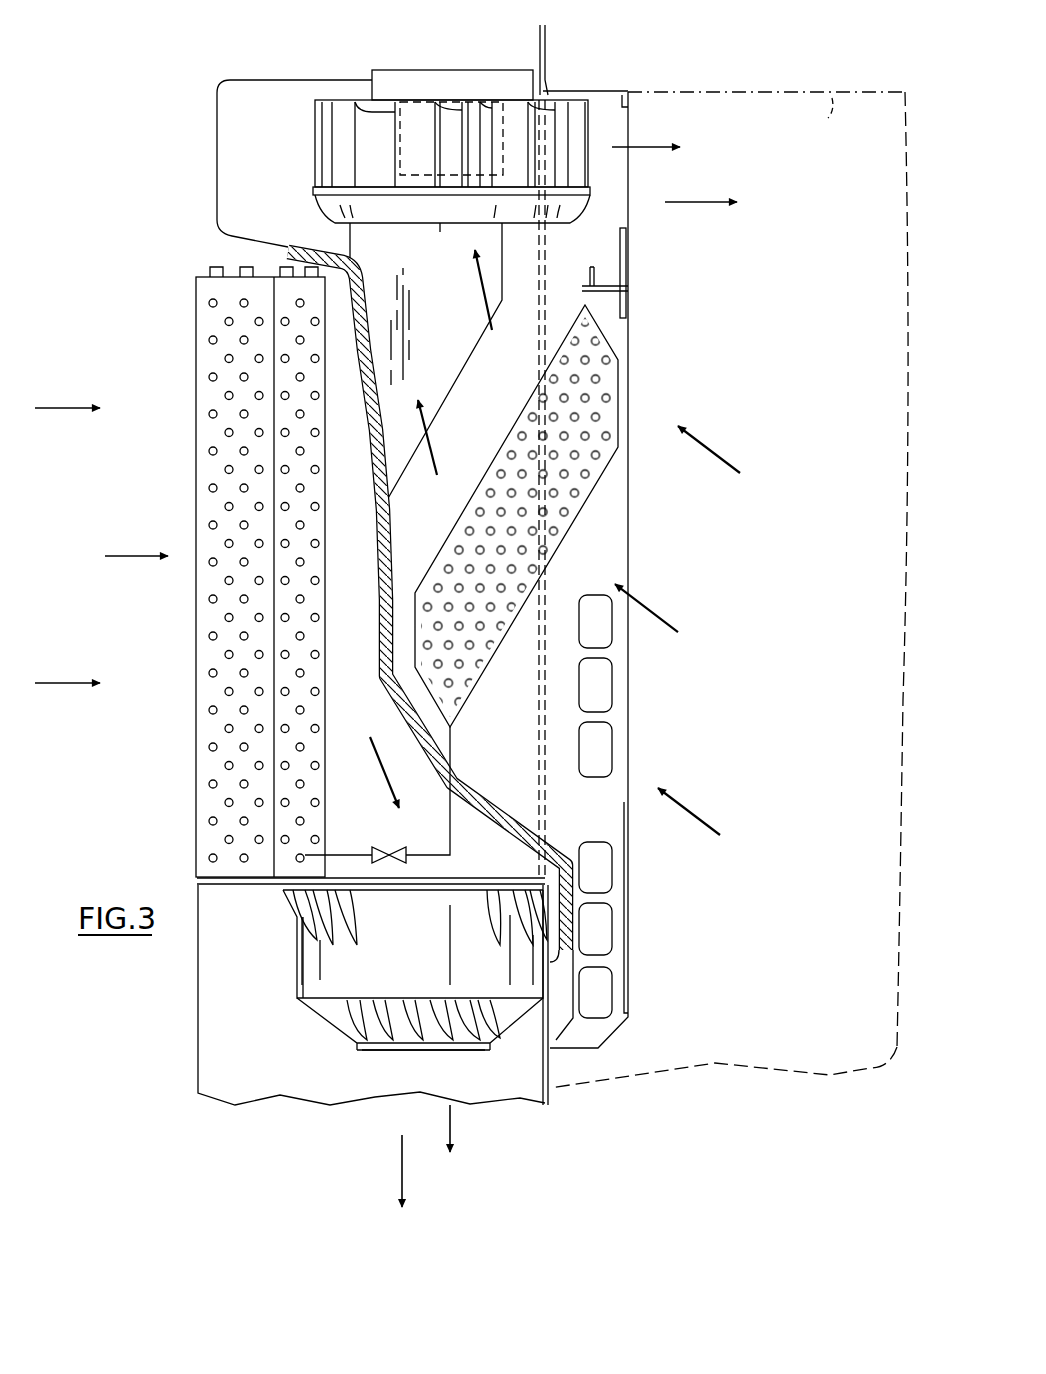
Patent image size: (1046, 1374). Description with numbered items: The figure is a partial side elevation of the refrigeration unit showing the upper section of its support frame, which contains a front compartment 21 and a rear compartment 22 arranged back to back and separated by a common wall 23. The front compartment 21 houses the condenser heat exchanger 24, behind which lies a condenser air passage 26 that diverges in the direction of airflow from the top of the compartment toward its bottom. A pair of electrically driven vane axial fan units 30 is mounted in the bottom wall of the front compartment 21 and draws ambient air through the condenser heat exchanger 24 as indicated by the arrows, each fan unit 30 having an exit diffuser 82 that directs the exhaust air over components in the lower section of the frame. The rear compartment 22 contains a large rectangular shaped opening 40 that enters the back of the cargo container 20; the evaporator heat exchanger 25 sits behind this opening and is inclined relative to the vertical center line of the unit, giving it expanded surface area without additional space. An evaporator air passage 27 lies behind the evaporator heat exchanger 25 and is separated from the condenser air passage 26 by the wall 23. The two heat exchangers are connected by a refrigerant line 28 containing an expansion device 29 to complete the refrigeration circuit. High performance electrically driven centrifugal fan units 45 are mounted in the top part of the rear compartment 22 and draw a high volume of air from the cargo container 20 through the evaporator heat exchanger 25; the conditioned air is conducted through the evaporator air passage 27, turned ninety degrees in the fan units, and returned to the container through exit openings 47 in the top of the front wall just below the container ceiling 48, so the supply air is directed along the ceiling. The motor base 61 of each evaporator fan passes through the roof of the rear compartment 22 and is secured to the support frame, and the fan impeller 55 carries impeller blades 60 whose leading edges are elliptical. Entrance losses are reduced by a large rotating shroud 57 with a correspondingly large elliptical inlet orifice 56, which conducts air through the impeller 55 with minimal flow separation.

The cargo container 20 is at (766, 78).
The front compartment 21 is at (190, 772).
The rear compartment 22 is at (641, 540).
The wall 23 is at (388, 520).
The condenser heat exchanger 24 is at (196, 464).
The evaporator heat exchanger 25 is at (607, 338).
The condenser air passage 26 is at (341, 645).
The evaporator air passage 27 is at (498, 429).
The refrigerant line 28 is at (452, 752).
The expansion device 29 is at (388, 846).
The vane axial fan unit 30 is at (440, 977).
The rectangular shaped opening 40 is at (621, 689).
The centrifugal fan unit 45 is at (306, 104).
The exit opening 47 is at (632, 120).
The container ceiling 48 is at (830, 100).
The fan impeller 55 is at (316, 160).
The inlet orifice 56 is at (440, 225).
The rotating shroud 57 is at (575, 213).
The impeller blade 60 is at (370, 118).
The motor base 61 is at (407, 70).
The exit diffuser 82 is at (380, 1051).